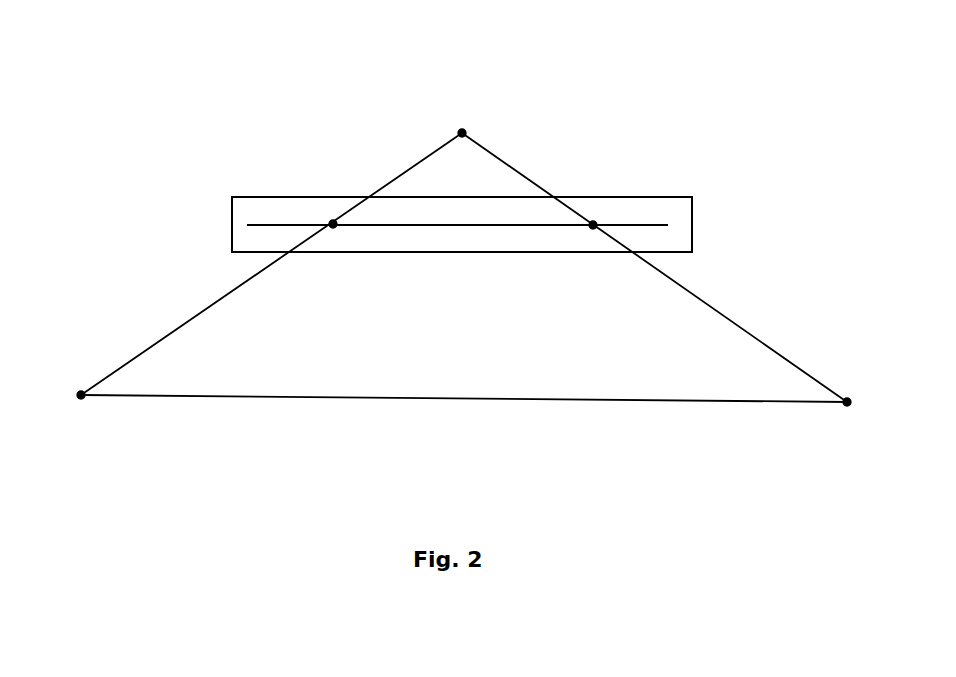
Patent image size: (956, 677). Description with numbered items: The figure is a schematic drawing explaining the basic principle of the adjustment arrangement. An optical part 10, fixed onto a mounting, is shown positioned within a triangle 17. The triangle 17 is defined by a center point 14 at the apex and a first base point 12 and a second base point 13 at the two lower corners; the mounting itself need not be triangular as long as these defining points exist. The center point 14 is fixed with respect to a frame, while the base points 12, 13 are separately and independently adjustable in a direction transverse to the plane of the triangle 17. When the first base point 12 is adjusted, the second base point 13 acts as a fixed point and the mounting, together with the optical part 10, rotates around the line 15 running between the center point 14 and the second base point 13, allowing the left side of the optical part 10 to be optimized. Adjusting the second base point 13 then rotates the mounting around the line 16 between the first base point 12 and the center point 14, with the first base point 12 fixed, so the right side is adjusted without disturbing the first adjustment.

The optical part 10 is at (622, 210).
The first base point 12 is at (78, 405).
The second base point 13 is at (843, 410).
The center point 14 is at (462, 133).
The line 15 is at (687, 288).
The line 16 is at (240, 287).
The triangle 17 is at (427, 347).